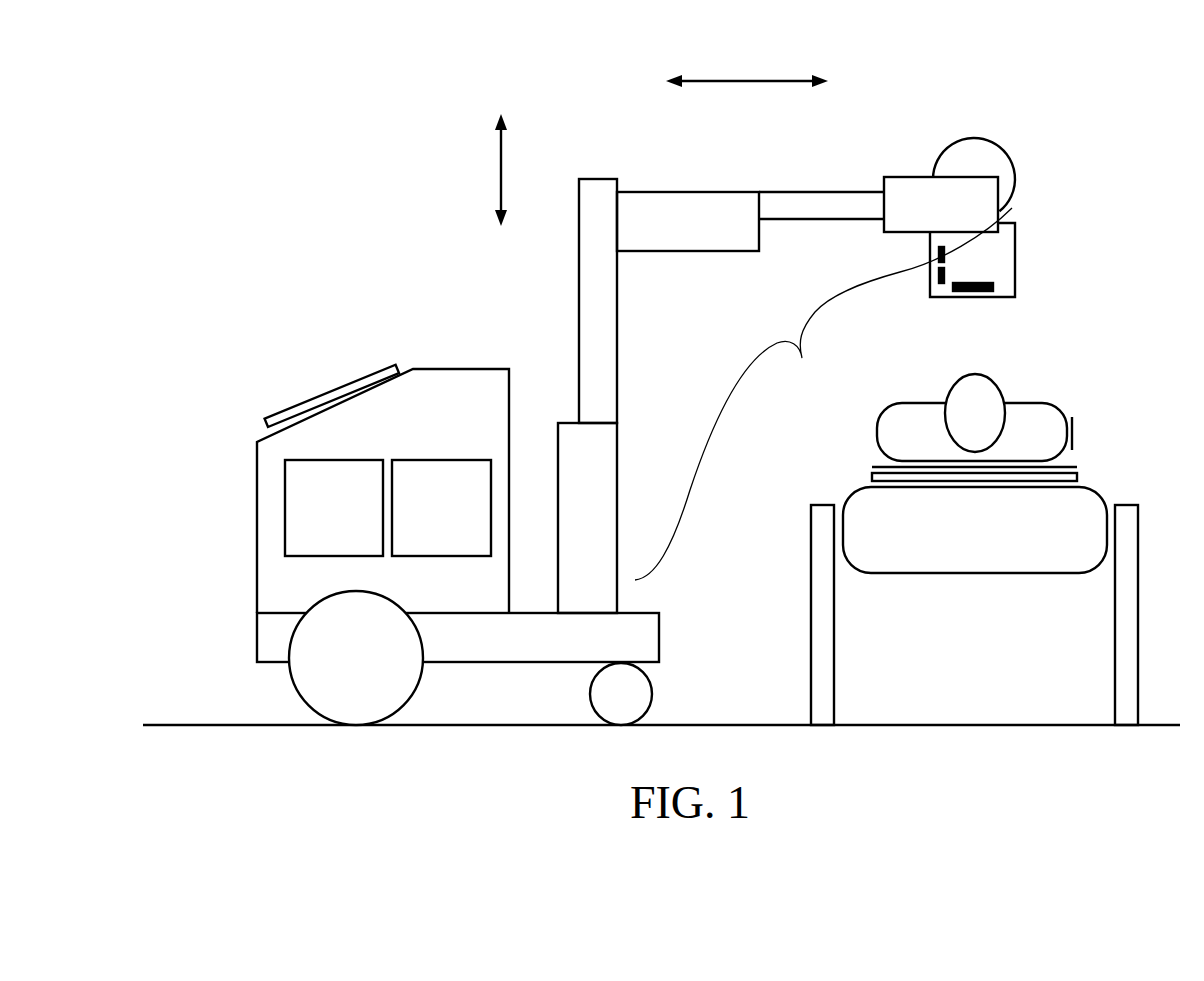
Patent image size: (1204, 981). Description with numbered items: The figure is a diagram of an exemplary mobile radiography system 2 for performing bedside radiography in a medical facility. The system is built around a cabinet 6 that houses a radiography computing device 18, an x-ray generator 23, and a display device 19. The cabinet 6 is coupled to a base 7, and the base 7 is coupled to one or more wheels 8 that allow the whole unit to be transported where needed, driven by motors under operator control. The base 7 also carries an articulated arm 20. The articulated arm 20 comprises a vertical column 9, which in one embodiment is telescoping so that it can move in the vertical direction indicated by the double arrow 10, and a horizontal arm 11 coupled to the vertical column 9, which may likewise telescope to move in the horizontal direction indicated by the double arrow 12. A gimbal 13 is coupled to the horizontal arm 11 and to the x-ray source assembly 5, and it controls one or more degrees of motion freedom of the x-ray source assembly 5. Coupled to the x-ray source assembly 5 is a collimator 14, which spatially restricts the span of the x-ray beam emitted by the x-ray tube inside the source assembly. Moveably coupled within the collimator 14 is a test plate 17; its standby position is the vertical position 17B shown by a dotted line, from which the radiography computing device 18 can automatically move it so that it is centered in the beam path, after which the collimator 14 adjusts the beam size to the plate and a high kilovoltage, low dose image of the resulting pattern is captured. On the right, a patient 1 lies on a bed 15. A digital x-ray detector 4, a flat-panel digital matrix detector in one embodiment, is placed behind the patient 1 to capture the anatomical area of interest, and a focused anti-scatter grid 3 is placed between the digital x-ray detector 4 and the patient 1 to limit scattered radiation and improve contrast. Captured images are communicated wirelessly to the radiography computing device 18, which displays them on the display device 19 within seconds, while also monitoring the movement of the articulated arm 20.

The patient 1 is at (1030, 403).
The mobile radiography system 2 is at (382, 126).
The anti-scatter grid 3 is at (1074, 466).
The digital x-ray detector 4 is at (1078, 477).
The x-ray source assembly 5 is at (971, 137).
The cabinet 6 is at (483, 369).
The base 7 is at (500, 651).
The wheels 8 is at (348, 670).
The vertical column 9 is at (617, 375).
The double arrow 10 is at (501, 163).
The horizontal arm 11 is at (717, 192).
The double arrow 12 is at (747, 80).
The gimbal 13 is at (905, 177).
The collimator 14 is at (1015, 263).
The bed 15 is at (960, 545).
The test plate 17 is at (970, 292).
The vertical position 17B is at (934, 277).
The radiography computing device 18 is at (318, 521).
The display device 19 is at (341, 388).
The articulated arm 20 is at (823, 394).
The x-ray generator 23 is at (425, 521).